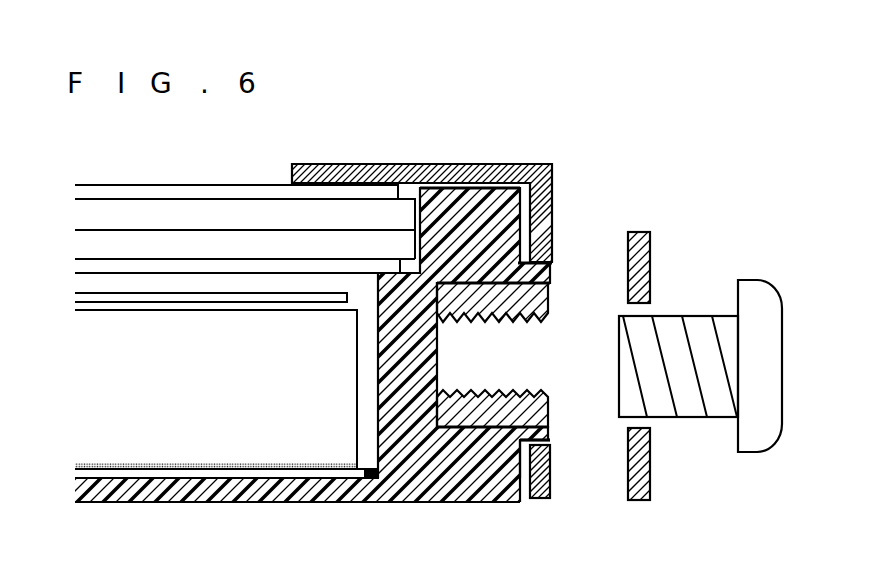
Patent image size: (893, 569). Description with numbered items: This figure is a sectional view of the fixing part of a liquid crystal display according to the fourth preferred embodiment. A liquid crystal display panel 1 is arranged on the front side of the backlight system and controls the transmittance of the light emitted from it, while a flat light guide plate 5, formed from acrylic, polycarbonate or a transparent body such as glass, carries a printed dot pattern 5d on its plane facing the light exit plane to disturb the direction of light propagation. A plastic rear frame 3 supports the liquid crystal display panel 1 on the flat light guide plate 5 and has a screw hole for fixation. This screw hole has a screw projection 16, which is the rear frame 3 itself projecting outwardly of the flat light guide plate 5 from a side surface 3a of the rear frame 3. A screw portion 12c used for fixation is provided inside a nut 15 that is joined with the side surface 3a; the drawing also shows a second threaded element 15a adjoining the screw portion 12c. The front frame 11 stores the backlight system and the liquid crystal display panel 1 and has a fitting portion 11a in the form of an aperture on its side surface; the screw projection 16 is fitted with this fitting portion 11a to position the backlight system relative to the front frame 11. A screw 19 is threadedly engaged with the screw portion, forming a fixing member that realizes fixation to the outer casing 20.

The liquid crystal display panel 1 is at (66, 178).
The rear frame 3 is at (78, 492).
The side surface 3a is at (521, 478).
The flat light guide plate 5 is at (92, 385).
The printed dot pattern 5d is at (108, 465).
The front frame 11 is at (552, 224).
The fitting portion 11a is at (551, 452).
The screw portion 12c is at (545, 322).
The nut 15 is at (488, 310).
The threaded portion 15a is at (548, 401).
The screw projection 16 is at (548, 440).
The screw 19 is at (752, 280).
The outer casing 20 is at (652, 256).